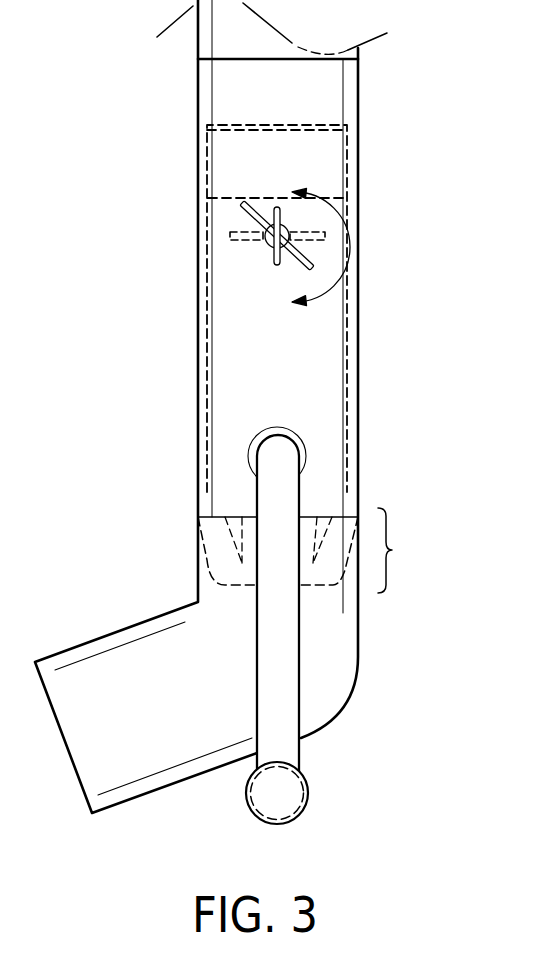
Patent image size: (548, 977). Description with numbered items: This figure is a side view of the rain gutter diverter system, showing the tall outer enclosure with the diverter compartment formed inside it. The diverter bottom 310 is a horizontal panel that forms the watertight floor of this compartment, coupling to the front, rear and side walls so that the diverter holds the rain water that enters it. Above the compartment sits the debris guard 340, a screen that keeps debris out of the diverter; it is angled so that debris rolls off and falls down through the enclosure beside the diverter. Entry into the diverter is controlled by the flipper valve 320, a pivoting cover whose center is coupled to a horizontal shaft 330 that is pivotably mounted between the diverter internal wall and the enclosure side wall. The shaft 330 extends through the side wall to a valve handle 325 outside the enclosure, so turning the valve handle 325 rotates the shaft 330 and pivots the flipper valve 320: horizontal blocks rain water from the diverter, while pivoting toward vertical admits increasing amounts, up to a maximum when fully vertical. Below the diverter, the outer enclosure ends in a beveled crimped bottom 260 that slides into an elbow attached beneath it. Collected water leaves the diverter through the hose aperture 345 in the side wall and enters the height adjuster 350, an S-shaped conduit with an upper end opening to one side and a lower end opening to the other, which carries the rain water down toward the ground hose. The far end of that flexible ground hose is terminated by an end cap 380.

The diverter bottom 310 is at (233, 492).
The debris guard 340 is at (237, 166).
The shaft 330 is at (284, 231).
The flipper valve 320 is at (325, 236).
The valve handle 325 is at (277, 262).
The crimped bottom 260 is at (331, 550).
The hose aperture 345 is at (297, 437).
The height adjuster 350 is at (283, 703).
The end cap 380 is at (288, 792).